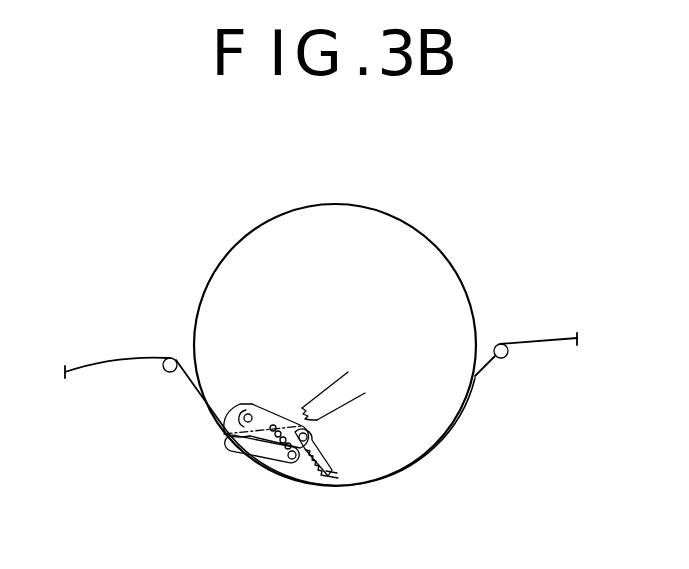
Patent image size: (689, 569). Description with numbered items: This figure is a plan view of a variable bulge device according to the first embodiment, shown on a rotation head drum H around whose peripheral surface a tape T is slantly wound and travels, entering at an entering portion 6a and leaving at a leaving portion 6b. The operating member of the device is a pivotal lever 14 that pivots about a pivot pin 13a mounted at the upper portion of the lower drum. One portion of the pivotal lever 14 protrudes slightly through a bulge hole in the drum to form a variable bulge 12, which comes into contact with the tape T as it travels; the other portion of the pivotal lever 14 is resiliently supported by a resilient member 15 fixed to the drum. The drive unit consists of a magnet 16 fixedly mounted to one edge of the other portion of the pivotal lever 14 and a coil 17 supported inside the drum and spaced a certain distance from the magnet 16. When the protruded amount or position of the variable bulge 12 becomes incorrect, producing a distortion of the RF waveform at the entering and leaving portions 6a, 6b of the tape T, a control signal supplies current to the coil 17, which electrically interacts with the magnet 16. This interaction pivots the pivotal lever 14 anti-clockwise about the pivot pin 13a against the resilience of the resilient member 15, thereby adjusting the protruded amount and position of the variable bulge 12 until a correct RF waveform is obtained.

The rotation head drum H is at (414, 211).
The tape T is at (92, 367).
The entering portion 6a is at (185, 338).
The leaving portion 6b is at (489, 328).
The variable bulge 12 is at (226, 432).
The pivot pin 13a is at (236, 412).
The pivotal lever 14 is at (270, 442).
The resilient member 15 is at (307, 460).
The magnet 16 is at (272, 424).
The coil 17 is at (320, 422).